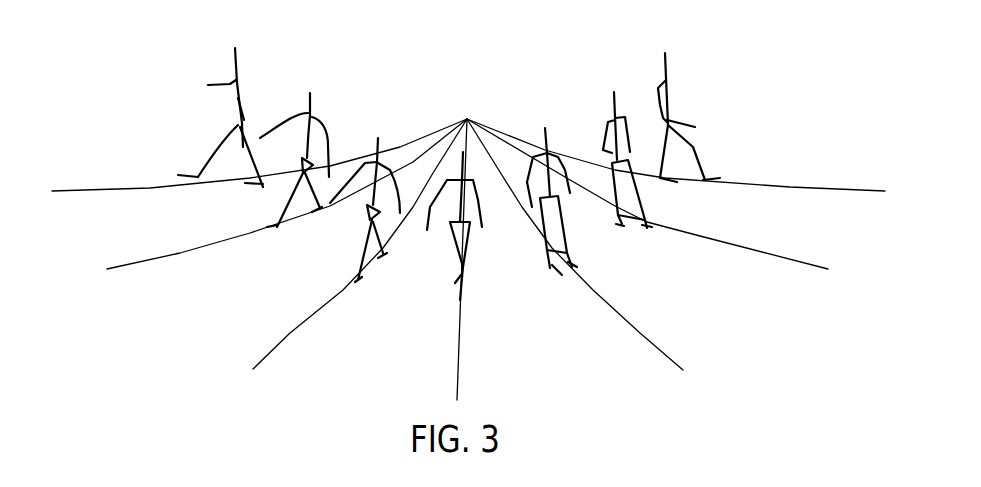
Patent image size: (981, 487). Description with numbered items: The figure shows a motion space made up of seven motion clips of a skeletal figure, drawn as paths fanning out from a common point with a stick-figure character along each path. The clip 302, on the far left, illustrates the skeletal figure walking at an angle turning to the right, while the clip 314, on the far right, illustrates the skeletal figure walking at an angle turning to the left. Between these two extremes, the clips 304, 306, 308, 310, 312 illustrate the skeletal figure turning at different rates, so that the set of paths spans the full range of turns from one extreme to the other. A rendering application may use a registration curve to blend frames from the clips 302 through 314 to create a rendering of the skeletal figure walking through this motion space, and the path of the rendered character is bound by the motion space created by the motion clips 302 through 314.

The clip 302 is at (127, 187).
The clip 304 is at (180, 252).
The clip 306 is at (288, 335).
The clip 308 is at (457, 372).
The clip 310 is at (653, 342).
The clip 312 is at (773, 255).
The clip 314 is at (812, 187).